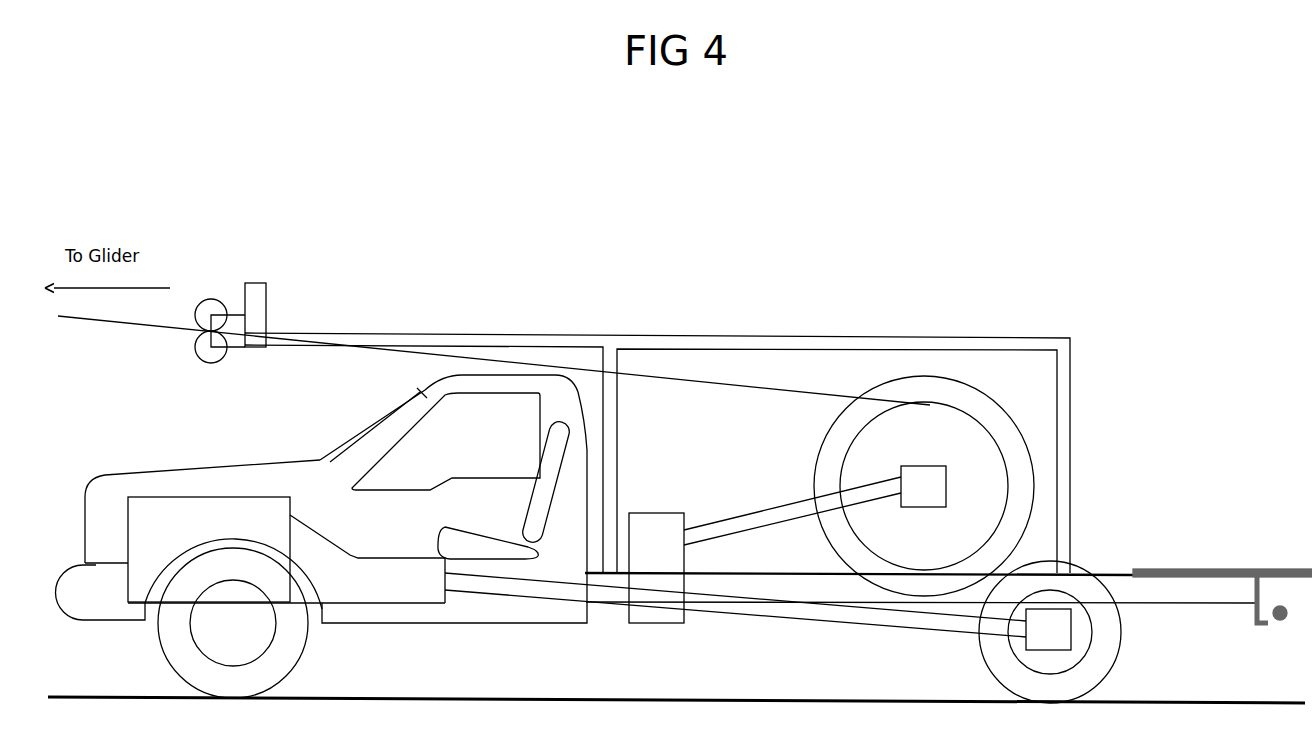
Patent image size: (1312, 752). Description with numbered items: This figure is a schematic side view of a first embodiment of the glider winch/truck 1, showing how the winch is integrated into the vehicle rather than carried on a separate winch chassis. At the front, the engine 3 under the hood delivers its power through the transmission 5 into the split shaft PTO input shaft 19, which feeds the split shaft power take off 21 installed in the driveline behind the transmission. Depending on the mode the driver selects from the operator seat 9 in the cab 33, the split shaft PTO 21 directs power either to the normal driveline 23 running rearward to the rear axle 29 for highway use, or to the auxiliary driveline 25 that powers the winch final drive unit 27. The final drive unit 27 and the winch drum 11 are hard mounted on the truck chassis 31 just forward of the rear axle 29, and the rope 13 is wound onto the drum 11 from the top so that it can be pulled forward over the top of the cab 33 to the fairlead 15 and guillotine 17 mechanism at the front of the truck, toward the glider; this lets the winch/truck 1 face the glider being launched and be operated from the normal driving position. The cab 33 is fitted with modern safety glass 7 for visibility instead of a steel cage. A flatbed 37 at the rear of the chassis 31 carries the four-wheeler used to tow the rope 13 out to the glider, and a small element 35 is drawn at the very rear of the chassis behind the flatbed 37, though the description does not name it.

The glider winch/truck 1 is at (93, 478).
The engine 3 is at (150, 510).
The transmission 5 is at (320, 562).
The safety glass 7 is at (343, 431).
The operator seat 9 is at (528, 503).
The winch drum 11 is at (925, 381).
The rope 13 is at (777, 386).
The fairlead 15 is at (209, 290).
The guillotine 17 is at (254, 280).
The split shaft PTO input shaft 19 is at (522, 589).
The split shaft power take off 21 is at (644, 624).
The driveline 23 is at (834, 621).
The auxiliary driveline 25 is at (733, 512).
The winch final drive unit 27 is at (950, 477).
The rear axle 29 is at (1055, 636).
The truck chassis 31 is at (1180, 600).
The cab 33 is at (442, 381).
The hitch ball 35 is at (1281, 630).
The flatbed 37 is at (1232, 565).